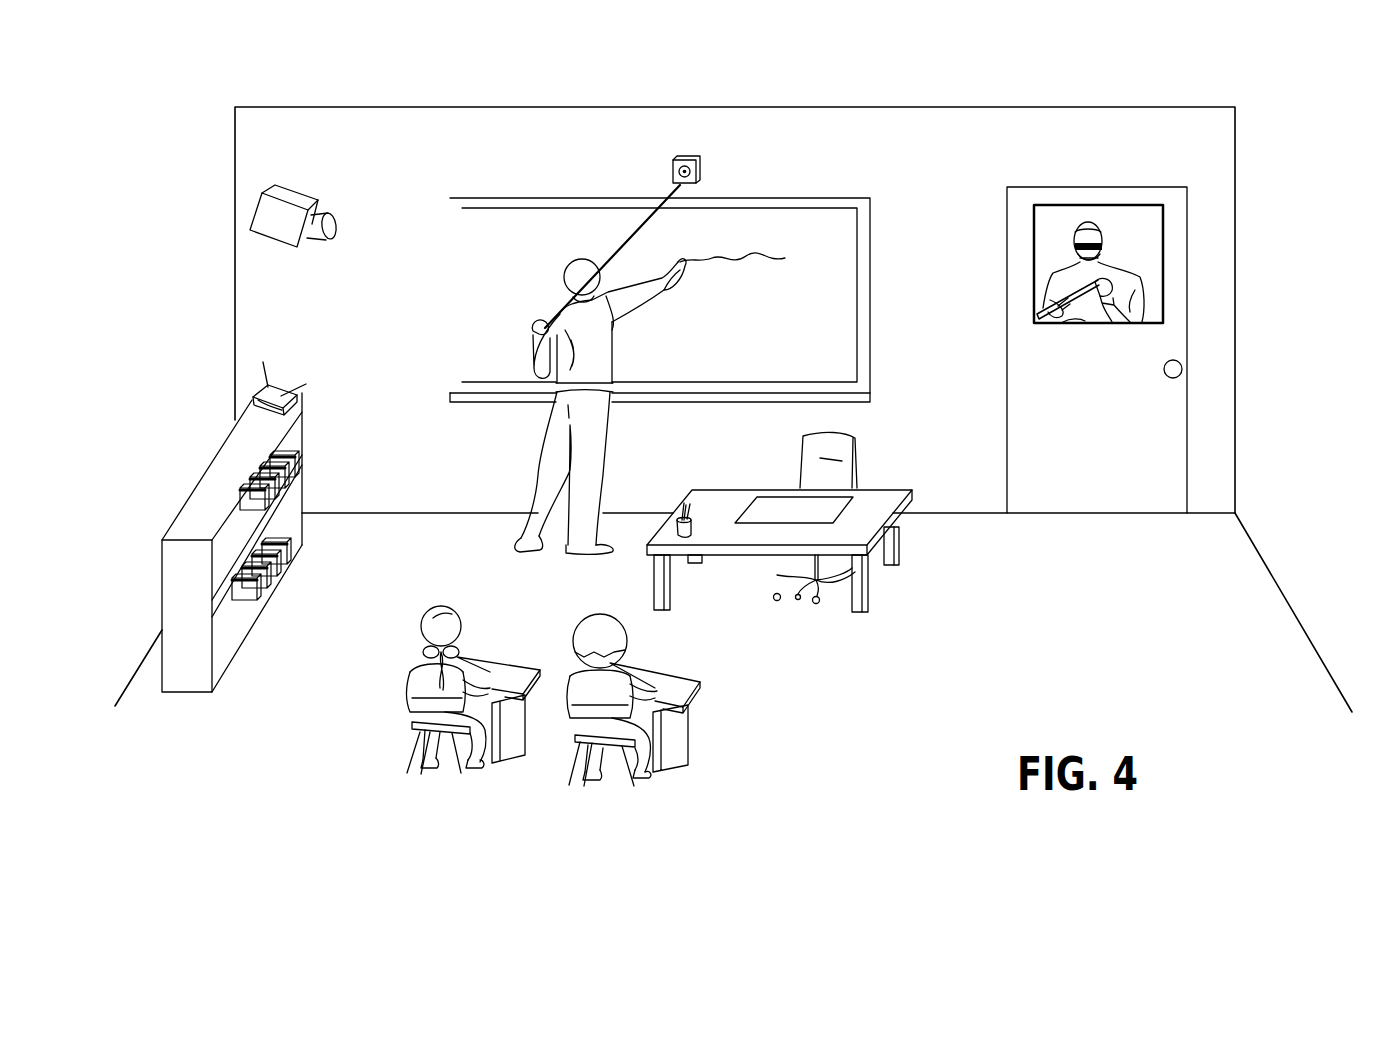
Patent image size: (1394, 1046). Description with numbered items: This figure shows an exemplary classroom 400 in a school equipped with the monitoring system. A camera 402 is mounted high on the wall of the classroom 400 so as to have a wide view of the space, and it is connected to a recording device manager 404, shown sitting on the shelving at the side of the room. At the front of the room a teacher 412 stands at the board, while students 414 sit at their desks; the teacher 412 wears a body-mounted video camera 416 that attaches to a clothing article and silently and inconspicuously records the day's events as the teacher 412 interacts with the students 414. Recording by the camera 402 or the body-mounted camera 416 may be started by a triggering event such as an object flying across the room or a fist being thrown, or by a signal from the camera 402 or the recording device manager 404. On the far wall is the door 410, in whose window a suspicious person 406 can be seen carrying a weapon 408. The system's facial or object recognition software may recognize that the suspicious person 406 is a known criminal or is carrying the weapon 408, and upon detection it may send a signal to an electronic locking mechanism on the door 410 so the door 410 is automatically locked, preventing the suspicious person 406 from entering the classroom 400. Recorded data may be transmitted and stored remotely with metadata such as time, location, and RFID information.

The classroom 400 is at (292, 112).
The camera 402 is at (264, 206).
The recording device manager 404 is at (251, 395).
The suspicious person 406 is at (1130, 306).
The weapon 408 is at (1130, 286).
The door 410 is at (1167, 389).
The teacher 412 is at (553, 310).
The students 414 is at (471, 767).
The body-mounted video camera 416 is at (671, 163).